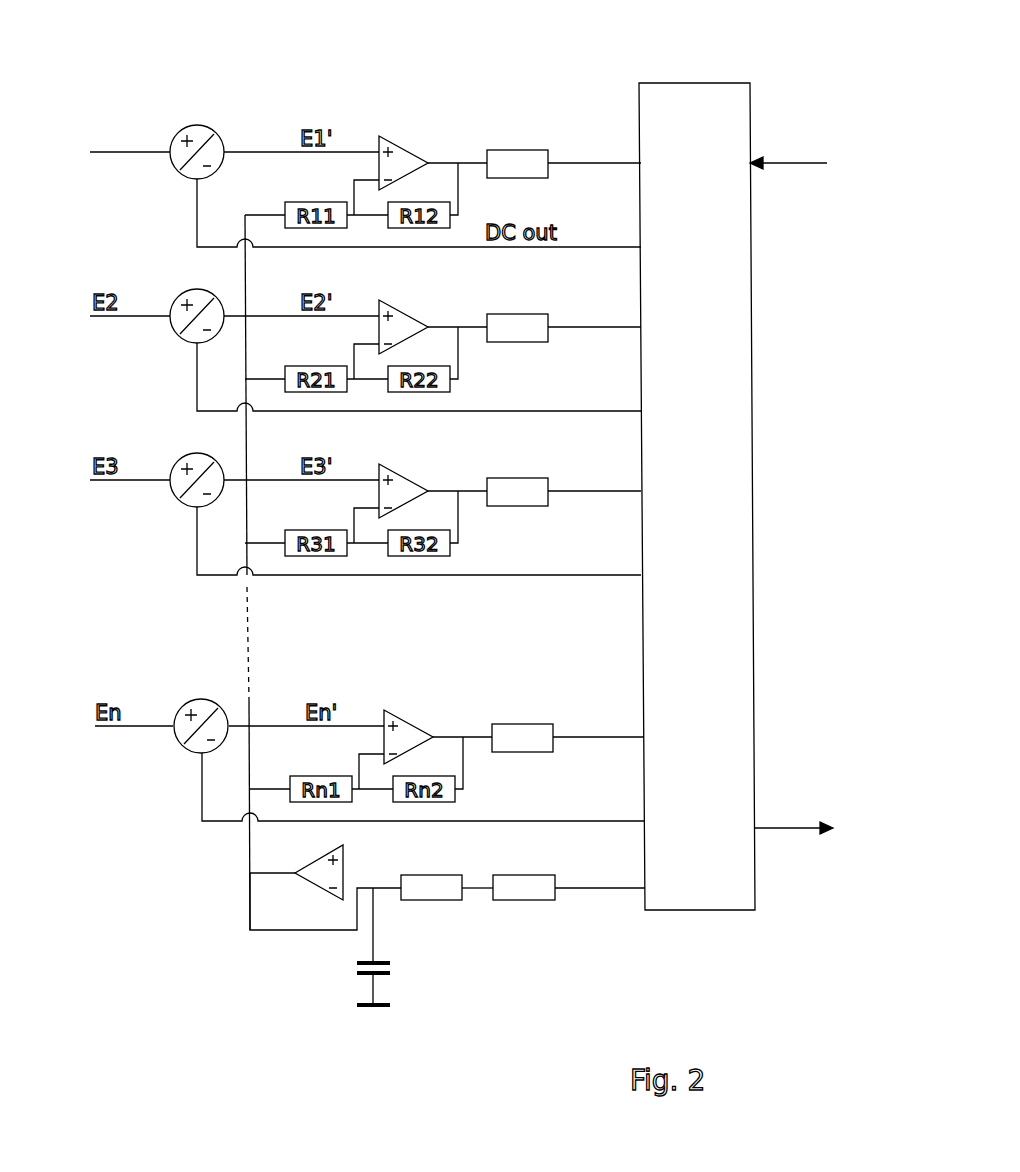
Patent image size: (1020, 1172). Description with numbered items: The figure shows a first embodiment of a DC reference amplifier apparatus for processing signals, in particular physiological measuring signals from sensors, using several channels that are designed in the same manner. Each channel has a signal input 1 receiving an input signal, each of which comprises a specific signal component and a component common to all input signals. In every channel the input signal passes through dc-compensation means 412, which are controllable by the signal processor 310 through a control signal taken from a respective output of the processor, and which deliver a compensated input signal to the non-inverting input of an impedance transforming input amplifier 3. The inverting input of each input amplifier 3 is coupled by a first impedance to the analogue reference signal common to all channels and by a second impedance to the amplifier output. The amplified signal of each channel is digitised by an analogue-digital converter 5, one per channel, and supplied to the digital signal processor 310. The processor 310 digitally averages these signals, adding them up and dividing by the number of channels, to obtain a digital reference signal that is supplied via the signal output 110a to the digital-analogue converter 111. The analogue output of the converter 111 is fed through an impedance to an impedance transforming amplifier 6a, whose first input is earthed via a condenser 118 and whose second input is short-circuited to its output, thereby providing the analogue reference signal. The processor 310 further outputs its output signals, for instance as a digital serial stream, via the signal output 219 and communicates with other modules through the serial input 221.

The signal input 1 is at (103, 155).
The input amplifier 3 is at (402, 120).
The analogue-digital converter 5 is at (518, 150).
The dc-compensation means 412 is at (197, 125).
The digital signal processor 310 is at (701, 83).
The serial input 221 is at (797, 165).
The signal output 219 is at (803, 830).
The digital-analogue converter 111 is at (525, 900).
The signal output 110a is at (592, 888).
The condenser 118 is at (422, 968).
The impedance transforming amplifier 6a is at (312, 950).